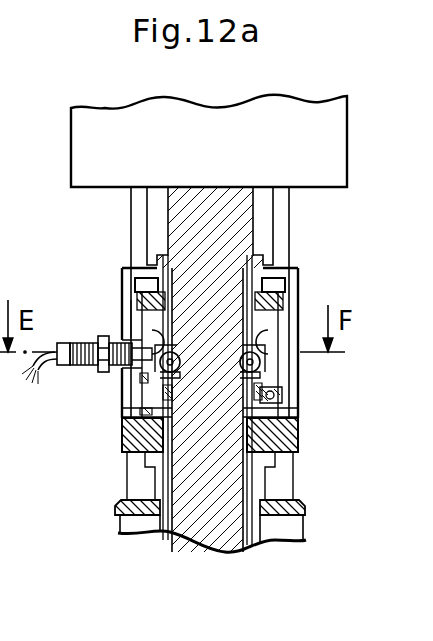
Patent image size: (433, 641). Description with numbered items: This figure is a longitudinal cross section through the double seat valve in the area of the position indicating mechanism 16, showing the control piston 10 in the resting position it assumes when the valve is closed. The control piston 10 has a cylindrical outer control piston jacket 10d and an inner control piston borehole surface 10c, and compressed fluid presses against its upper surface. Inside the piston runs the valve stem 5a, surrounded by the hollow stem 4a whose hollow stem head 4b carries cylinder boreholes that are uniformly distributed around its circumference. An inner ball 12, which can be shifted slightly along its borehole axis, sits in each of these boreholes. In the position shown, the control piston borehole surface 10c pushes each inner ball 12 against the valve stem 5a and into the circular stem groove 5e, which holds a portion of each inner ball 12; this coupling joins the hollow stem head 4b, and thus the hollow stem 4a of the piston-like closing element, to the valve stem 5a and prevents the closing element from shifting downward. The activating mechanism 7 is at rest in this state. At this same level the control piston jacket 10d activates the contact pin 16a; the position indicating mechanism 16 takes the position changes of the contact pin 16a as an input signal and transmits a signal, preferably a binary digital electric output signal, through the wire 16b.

The activating mechanism 7 is at (85, 141).
The valve stem 5a is at (242, 223).
The hollow stem 4a is at (161, 530).
The control piston 10 is at (295, 279).
The control piston jacket 10d is at (133, 322).
The control piston borehole surface 10c is at (122, 372).
The stem groove 5e is at (140, 410).
The hollow stem head 4b is at (272, 352).
The inner ball 12 is at (268, 378).
The position indicating mechanism 16 is at (68, 343).
The contact pin 16a is at (112, 338).
The wire 16b is at (45, 381).